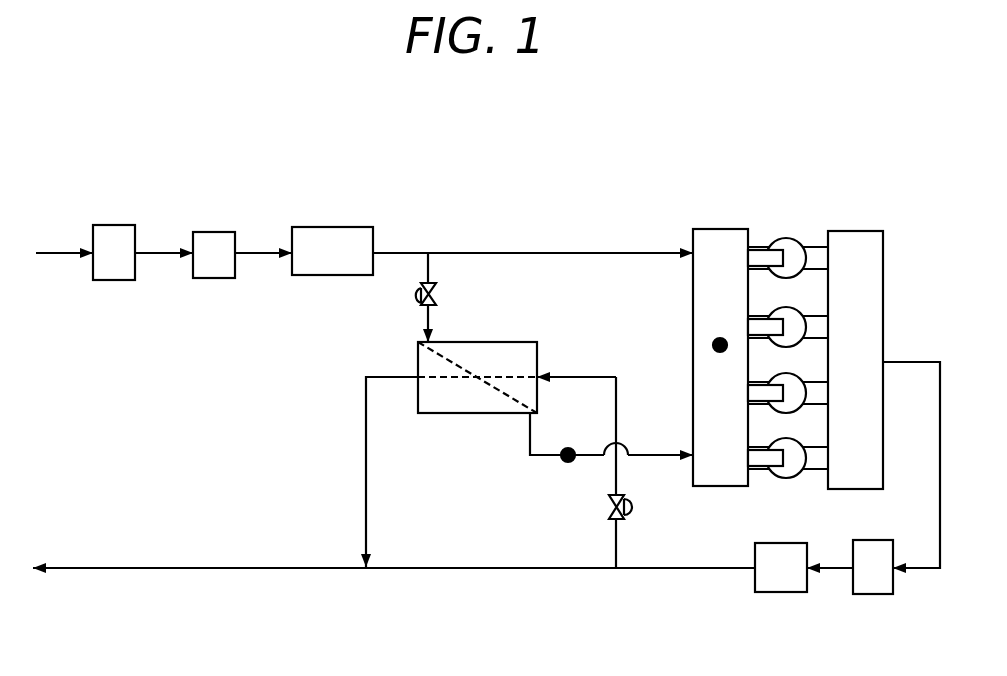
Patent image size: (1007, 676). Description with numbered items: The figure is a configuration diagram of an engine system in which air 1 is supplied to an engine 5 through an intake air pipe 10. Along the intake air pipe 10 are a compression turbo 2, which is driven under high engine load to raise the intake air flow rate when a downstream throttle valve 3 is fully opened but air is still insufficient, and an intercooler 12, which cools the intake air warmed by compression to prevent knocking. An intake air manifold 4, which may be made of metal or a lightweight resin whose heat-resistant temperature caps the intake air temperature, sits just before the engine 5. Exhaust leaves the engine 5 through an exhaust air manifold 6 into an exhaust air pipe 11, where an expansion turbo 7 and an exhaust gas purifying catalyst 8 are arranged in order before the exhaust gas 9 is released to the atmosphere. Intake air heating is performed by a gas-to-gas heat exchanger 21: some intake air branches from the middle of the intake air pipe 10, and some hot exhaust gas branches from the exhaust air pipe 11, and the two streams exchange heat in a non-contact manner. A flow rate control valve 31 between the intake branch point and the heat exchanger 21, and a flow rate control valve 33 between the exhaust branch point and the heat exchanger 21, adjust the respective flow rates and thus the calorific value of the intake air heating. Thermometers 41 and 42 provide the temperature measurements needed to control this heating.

The air 1 is at (40, 252).
The compression turbo 2 is at (112, 225).
The intercooler 12 is at (215, 232).
The intake air pipe 10 is at (258, 252).
The throttle valve 3 is at (331, 227).
The flow rate control valve 31 is at (413, 295).
The heat exchanger 21 is at (478, 342).
The intake air manifold 4 is at (716, 229).
The thermometer 41 is at (712, 345).
The engine 5 is at (785, 238).
The exhaust air manifold 6 is at (855, 231).
The thermometer 42 is at (568, 462).
The flow rate control valve 33 is at (632, 507).
The expansion turbo 7 is at (870, 594).
The exhaust gas purifying catalyst 8 is at (785, 592).
The exhaust air pipe 11 is at (683, 570).
The exhaust gas 9 is at (45, 570).